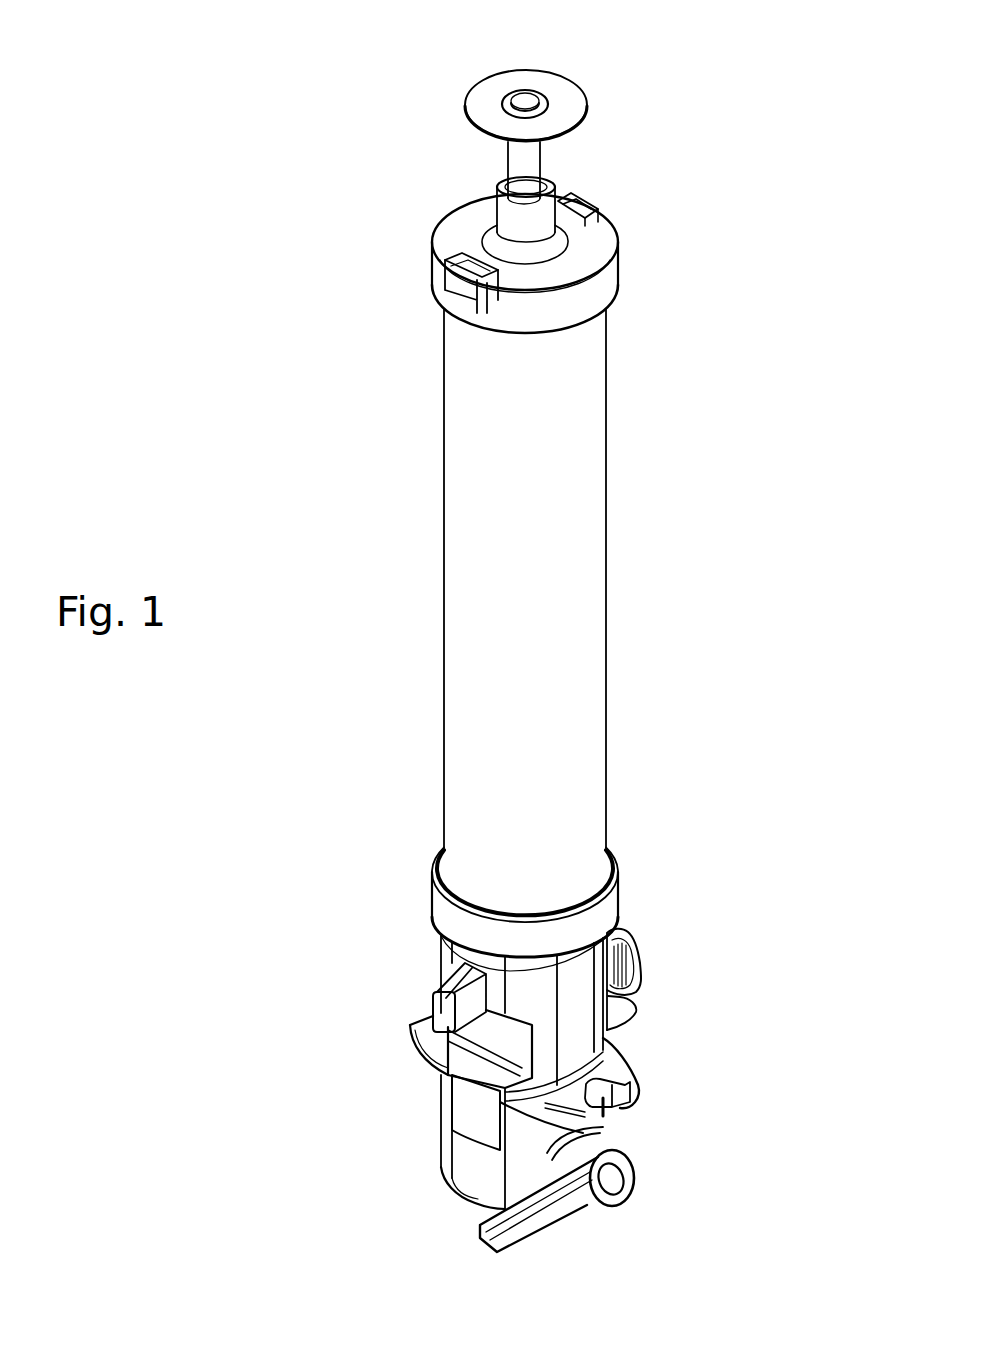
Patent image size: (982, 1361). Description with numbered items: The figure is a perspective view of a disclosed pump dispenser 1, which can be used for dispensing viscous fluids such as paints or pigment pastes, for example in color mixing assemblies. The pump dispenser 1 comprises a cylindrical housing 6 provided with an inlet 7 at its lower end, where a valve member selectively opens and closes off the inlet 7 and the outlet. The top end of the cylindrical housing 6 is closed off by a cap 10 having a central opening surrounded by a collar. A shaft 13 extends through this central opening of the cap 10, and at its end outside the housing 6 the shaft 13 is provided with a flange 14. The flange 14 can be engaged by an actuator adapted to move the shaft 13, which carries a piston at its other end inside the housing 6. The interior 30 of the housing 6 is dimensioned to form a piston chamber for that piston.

The pump dispenser 1 is at (718, 134).
The flange 14 is at (563, 85).
The shaft 13 is at (528, 158).
The cap 10 is at (597, 249).
The cylindrical housing 6 is at (597, 541).
The inlet 7 is at (658, 948).
The interior of housing 30 is at (528, 1240).